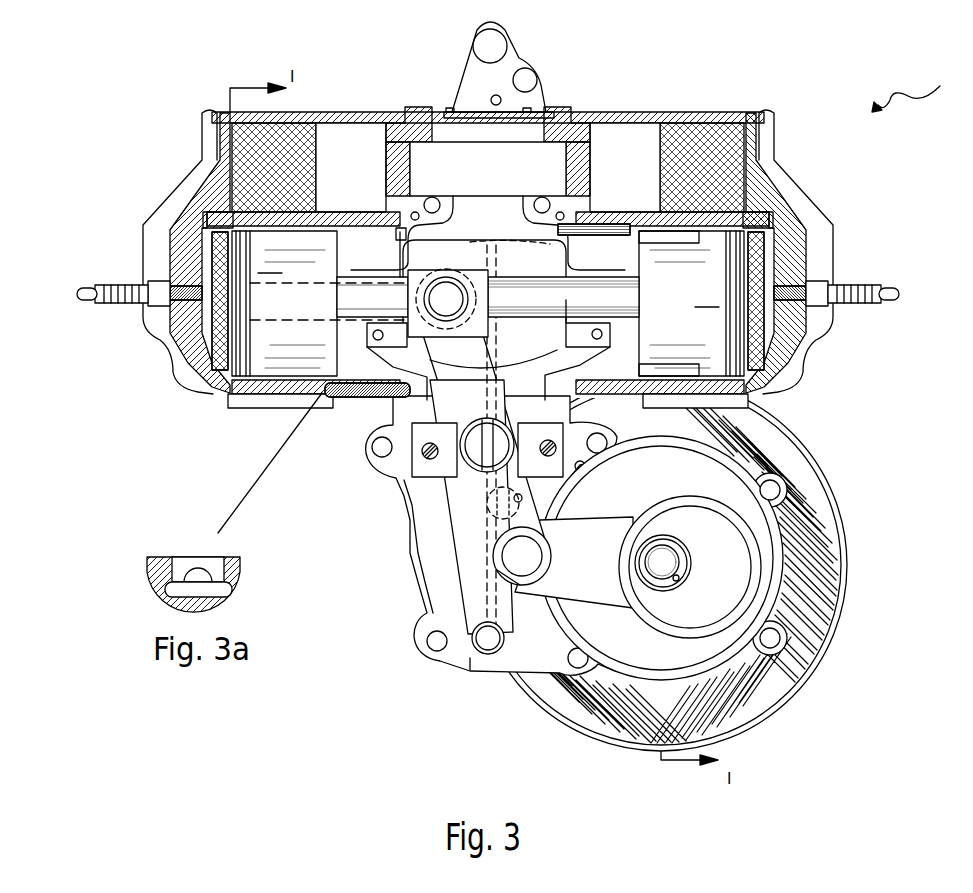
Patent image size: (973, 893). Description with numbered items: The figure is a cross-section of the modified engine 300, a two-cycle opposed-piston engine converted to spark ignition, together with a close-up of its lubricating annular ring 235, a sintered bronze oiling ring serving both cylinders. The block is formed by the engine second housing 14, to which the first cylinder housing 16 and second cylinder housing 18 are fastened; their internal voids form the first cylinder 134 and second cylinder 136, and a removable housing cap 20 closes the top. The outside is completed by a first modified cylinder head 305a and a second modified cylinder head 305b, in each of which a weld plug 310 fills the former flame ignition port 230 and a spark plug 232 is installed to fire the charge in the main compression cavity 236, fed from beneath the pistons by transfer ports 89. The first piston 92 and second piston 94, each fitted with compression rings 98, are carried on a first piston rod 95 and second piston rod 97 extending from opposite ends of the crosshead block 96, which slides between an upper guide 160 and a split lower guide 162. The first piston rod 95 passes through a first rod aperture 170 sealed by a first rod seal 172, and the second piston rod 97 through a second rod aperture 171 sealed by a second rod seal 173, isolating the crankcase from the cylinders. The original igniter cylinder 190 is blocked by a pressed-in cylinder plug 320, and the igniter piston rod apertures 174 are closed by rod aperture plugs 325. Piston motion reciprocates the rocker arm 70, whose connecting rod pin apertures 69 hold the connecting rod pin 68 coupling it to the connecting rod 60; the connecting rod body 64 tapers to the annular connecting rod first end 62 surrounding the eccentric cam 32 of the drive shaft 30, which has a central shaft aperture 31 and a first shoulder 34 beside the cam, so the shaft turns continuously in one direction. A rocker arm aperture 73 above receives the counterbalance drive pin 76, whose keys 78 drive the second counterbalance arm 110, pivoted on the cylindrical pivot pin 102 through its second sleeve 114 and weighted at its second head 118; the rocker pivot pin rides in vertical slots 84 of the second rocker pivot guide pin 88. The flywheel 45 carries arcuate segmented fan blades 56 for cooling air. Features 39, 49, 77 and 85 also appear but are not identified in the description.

In FIG. 3, the engine second housing 14 is at (404, 506).
In FIG. 3, the first cylinder housing 16 is at (262, 394).
In FIG. 3, the second cylinder housing 18 is at (705, 117).
In FIG. 3, the housing cap 20 is at (477, 60).
In FIG. 3, the drive shaft 30 is at (697, 562).
In FIG. 3, the shaft aperture 31 is at (678, 580).
In FIG. 3, the eccentric cam 32 is at (740, 553).
In FIG. 3, the first shoulder 34 is at (682, 547).
In FIG. 3, the mounting lug 39 is at (775, 624).
In FIG. 3, the flywheel 45 is at (664, 565).
In FIG. 3, the piston ring 49 is at (664, 244).
In FIG. 3, the arcuate segmented fan blades 56 is at (782, 447).
In FIG. 3, the connecting rod 60 is at (692, 565).
In FIG. 3, the connecting rod first end 62 is at (650, 503).
In FIG. 3, the connecting rod body 64 is at (607, 592).
In FIG. 3, the connecting rod pin 68 is at (542, 556).
In FIG. 3, the connecting rod pin apertures 69 is at (497, 570).
In FIG. 3, the rocker arm 70 is at (460, 385).
In FIG. 3, the rocker arm aperture 73 is at (522, 498).
In FIG. 3, the counterbalance drive pin 76 is at (490, 503).
In FIG. 3, the crank pin 77 is at (452, 296).
In FIG. 3, the keys 78 is at (490, 515).
In FIG. 3, the vertical slots 84 is at (479, 418).
In FIG. 3, the screws 85 is at (422, 455).
In FIG. 3, the second rocker pivot guide pin 88 is at (487, 459).
In FIG. 3, the transfer ports 89 is at (662, 362).
In FIG. 3, the first piston 92 is at (284, 303).
In FIG. 3, the second piston 94 is at (691, 303).
In FIG. 3, the first piston rod 95 is at (372, 237).
In FIG. 3, the crosshead block 96 is at (418, 278).
In FIG. 3, the second piston rod 97 is at (508, 320).
In FIG. 3, the compression rings 98 is at (238, 305).
In FIG. 3, the cylindrical pivot pin 102 is at (470, 660).
In FIG. 3, the second counterbalance arm 110 is at (512, 620).
In FIG. 3, the second sleeve 114 is at (500, 643).
In FIG. 3, the second head 118 is at (518, 244).
In FIG. 3, the first cylinder 134 is at (357, 378).
In FIG. 3, the second cylinder 136 is at (750, 380).
In FIG. 3, the upper guide 160 is at (403, 252).
In FIG. 3, the lower guide 162 is at (566, 325).
In FIG. 3, the first rod aperture 170 is at (393, 361).
In FIG. 3, the second rod aperture 171 is at (582, 361).
In FIG. 3, the first rod seal 172 is at (398, 270).
In FIG. 3, the second rod seal 173 is at (618, 258).
In FIG. 3, the igniter piston rod apertures 174 is at (394, 135).
In FIG. 3, the igniter cylinder 190 is at (362, 137).
In FIG. 3, the flame ignition port 230 is at (212, 208).
In FIG. 3, the spark plug 232 is at (130, 284).
In FIG. 3A, the lubricating annular ring 235 is at (176, 558).
In FIG. 3, the main compression cavity 236 is at (212, 344).
In FIG. 3, the modified engine 300 is at (922, 87).
In FIG. 3, the first modified cylinder head 305a is at (143, 326).
In FIG. 3, the second modified cylinder head 305b is at (822, 214).
In FIG. 3, the weld plug 310 is at (207, 222).
In FIG. 3, the cylinder plug 320 is at (258, 137).
In FIG. 3, the rod aperture plugs 325 is at (392, 140).